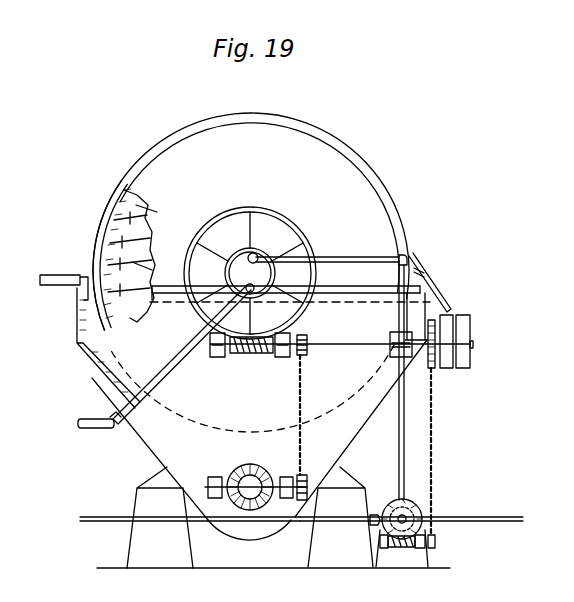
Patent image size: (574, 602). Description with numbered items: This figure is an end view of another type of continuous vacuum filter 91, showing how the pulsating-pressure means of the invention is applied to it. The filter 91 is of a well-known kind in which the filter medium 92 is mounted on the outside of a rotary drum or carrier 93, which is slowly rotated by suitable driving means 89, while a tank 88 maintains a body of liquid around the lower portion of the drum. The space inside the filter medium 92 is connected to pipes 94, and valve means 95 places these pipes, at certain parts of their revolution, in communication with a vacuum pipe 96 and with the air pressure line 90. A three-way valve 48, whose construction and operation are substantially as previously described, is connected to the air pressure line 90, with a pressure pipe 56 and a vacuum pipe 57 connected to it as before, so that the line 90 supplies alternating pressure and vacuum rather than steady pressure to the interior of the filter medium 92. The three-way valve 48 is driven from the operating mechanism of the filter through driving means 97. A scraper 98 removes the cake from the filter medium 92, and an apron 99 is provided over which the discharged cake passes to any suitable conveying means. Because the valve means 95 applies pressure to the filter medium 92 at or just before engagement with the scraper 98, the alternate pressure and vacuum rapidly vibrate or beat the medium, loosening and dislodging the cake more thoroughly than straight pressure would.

The three-way valve 48 is at (413, 503).
The pressure pipe 56 is at (96, 523).
The vacuum pipe 57 is at (485, 523).
The tank 88 is at (108, 380).
The driving means 89 is at (254, 356).
The air pressure line 90 is at (407, 427).
The filter 91 is at (412, 227).
The filter medium 92 is at (104, 238).
The rotary drum or carrier 93 is at (116, 205).
The pipes 94 is at (109, 262).
The valve means 95 is at (238, 271).
The vacuum pipe 96 is at (176, 362).
The driving means 97 is at (435, 453).
The scraper 98 is at (410, 257).
The apron 99 is at (428, 283).